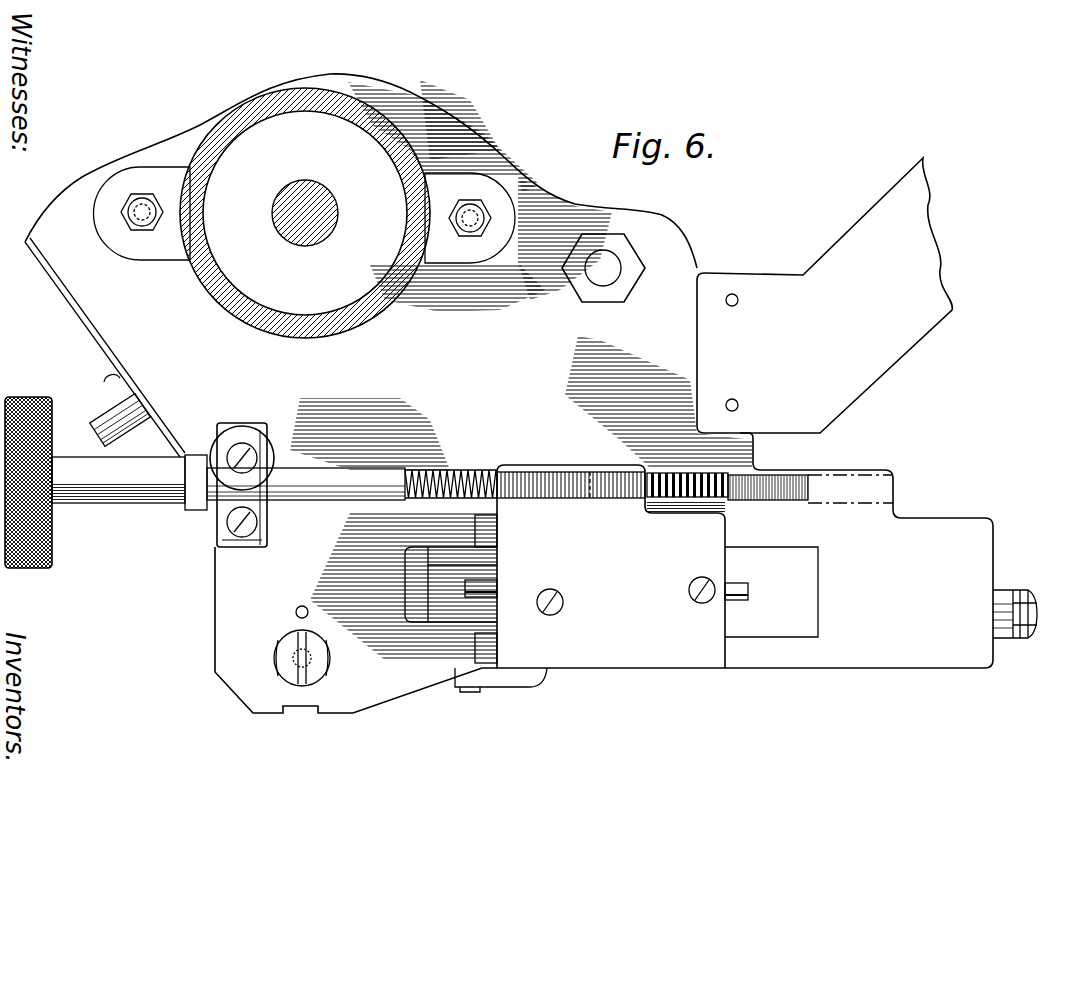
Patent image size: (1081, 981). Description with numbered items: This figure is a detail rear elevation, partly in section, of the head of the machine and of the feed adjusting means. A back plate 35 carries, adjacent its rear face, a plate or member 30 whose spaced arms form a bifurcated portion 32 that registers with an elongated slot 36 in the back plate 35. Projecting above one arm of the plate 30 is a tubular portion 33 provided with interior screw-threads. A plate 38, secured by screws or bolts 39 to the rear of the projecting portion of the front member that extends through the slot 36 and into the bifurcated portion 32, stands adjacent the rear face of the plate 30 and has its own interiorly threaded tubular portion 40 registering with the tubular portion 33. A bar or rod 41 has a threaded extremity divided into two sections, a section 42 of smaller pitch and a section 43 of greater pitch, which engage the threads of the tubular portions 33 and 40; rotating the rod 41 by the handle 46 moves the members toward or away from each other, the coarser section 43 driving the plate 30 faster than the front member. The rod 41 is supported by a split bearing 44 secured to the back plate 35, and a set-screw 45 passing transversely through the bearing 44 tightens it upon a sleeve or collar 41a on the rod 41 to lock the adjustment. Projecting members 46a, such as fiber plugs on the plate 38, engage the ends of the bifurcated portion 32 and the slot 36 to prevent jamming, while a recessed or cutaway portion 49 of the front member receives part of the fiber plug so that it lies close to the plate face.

The plate or member 30 is at (928, 530).
The bifurcated portion 32 is at (798, 588).
The tubular portion 33 is at (843, 475).
The back plate 35 is at (688, 264).
The elongated slot 36 is at (413, 580).
The plate 38 is at (647, 640).
The screws or bolts 39 is at (560, 600).
The tubular portion 40 is at (557, 470).
The bar or rod 41 is at (370, 478).
The sleeve or collar 41a is at (127, 488).
The threaded section 42 is at (465, 476).
The threaded section 43 is at (707, 498).
The bearing 44 is at (233, 502).
The set-screw 45 is at (264, 450).
The handle 46 is at (45, 566).
The projecting members 46a is at (478, 598).
The recessed or cutaway portion 49 is at (1020, 596).